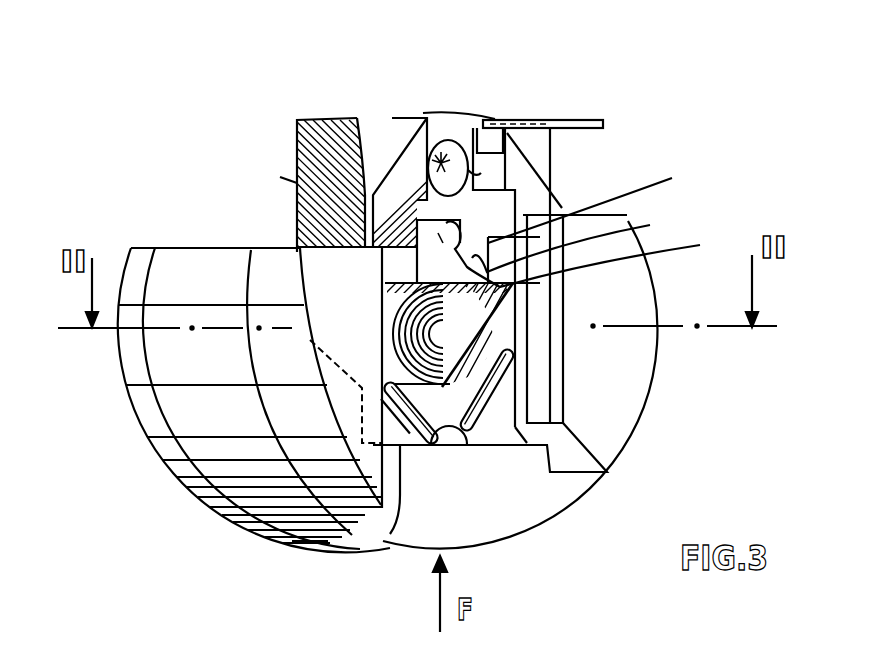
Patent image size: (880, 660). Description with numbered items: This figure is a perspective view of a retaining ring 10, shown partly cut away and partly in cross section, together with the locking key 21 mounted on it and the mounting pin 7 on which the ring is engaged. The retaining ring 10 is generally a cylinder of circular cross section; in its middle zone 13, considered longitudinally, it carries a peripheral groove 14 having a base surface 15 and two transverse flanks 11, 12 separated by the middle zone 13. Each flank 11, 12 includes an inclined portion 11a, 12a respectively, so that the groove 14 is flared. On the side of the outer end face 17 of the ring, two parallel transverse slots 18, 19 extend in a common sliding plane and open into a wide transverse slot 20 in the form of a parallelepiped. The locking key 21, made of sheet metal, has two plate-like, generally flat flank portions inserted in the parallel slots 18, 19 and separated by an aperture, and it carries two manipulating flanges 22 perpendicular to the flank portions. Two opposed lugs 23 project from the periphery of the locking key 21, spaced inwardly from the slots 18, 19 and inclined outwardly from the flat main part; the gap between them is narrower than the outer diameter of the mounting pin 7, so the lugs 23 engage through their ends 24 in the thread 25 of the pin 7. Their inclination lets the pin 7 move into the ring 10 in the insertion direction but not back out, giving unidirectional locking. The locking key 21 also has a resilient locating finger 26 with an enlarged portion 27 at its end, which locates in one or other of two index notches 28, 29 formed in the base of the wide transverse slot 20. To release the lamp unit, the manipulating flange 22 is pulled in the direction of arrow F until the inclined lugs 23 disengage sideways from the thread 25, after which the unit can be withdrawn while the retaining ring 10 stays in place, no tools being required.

The mounting pin 7 is at (490, 308).
The retaining ring 10 is at (135, 452).
The transverse flank 11 is at (300, 207).
The inclined portion 11a is at (343, 117).
The transverse flank 12 is at (380, 262).
The inclined portion 12a is at (392, 130).
The middle zone 13 is at (378, 100).
The peripheral groove 14 is at (362, 158).
The base surface 15 is at (297, 252).
The outer end face 17 is at (613, 397).
The transverse slot 18 is at (352, 512).
The transverse slot 19 is at (564, 212).
The wide transverse slot 20 is at (481, 486).
The locking key 21 is at (575, 150).
The manipulating flange 22 is at (570, 107).
The lug 23 is at (283, 311).
The end 24 is at (596, 202).
The thread 25 is at (395, 325).
The resilient locating finger 26 is at (478, 118).
The enlarged portion 27 is at (408, 122).
The index notch 28 is at (300, 180).
The index notch 29 is at (581, 242).